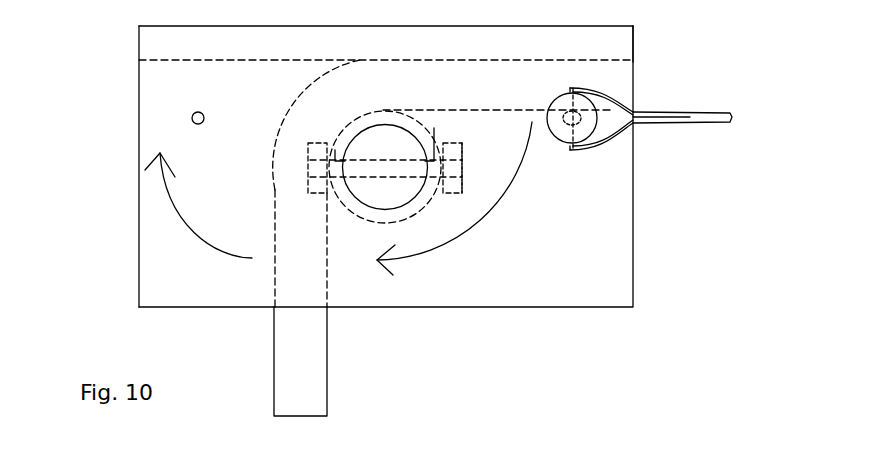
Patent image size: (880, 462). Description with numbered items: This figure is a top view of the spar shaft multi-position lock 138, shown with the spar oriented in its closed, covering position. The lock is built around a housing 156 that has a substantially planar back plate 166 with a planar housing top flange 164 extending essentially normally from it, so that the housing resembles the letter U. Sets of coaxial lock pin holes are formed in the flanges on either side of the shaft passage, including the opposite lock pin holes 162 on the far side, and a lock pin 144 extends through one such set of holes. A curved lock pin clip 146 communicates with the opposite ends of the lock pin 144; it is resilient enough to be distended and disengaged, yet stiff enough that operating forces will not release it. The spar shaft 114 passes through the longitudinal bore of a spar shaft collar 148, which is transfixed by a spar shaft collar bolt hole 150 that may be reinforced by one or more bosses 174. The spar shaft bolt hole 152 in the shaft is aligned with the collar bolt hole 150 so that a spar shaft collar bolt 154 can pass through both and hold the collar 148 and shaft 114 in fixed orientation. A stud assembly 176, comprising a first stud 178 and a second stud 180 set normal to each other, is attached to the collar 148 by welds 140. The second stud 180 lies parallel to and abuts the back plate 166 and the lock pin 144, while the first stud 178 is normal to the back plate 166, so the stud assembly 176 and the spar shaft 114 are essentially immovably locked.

The spar shaft 114 is at (410, 208).
The spar shaft multi-position lock 138 is at (634, 248).
The welds 140 is at (330, 20).
The lock pin 144 is at (554, 136).
The lock pin clip 146 is at (622, 130).
The spar shaft collar 148 is at (385, 111).
The spar shaft collar bolt hole 150 is at (335, 158).
The spar shaft bolt hole 152 is at (407, 158).
The spar shaft collar bolt 154 is at (462, 173).
The housing 156 is at (634, 40).
The opposite lock pin holes 162 is at (205, 112).
The housing top flange 164 is at (139, 128).
The back plate 166 is at (139, 44).
The bosses 174 is at (330, 150).
The stud assembly 176 is at (275, 190).
The first stud 178 is at (303, 343).
The second stud 180 is at (634, 88).